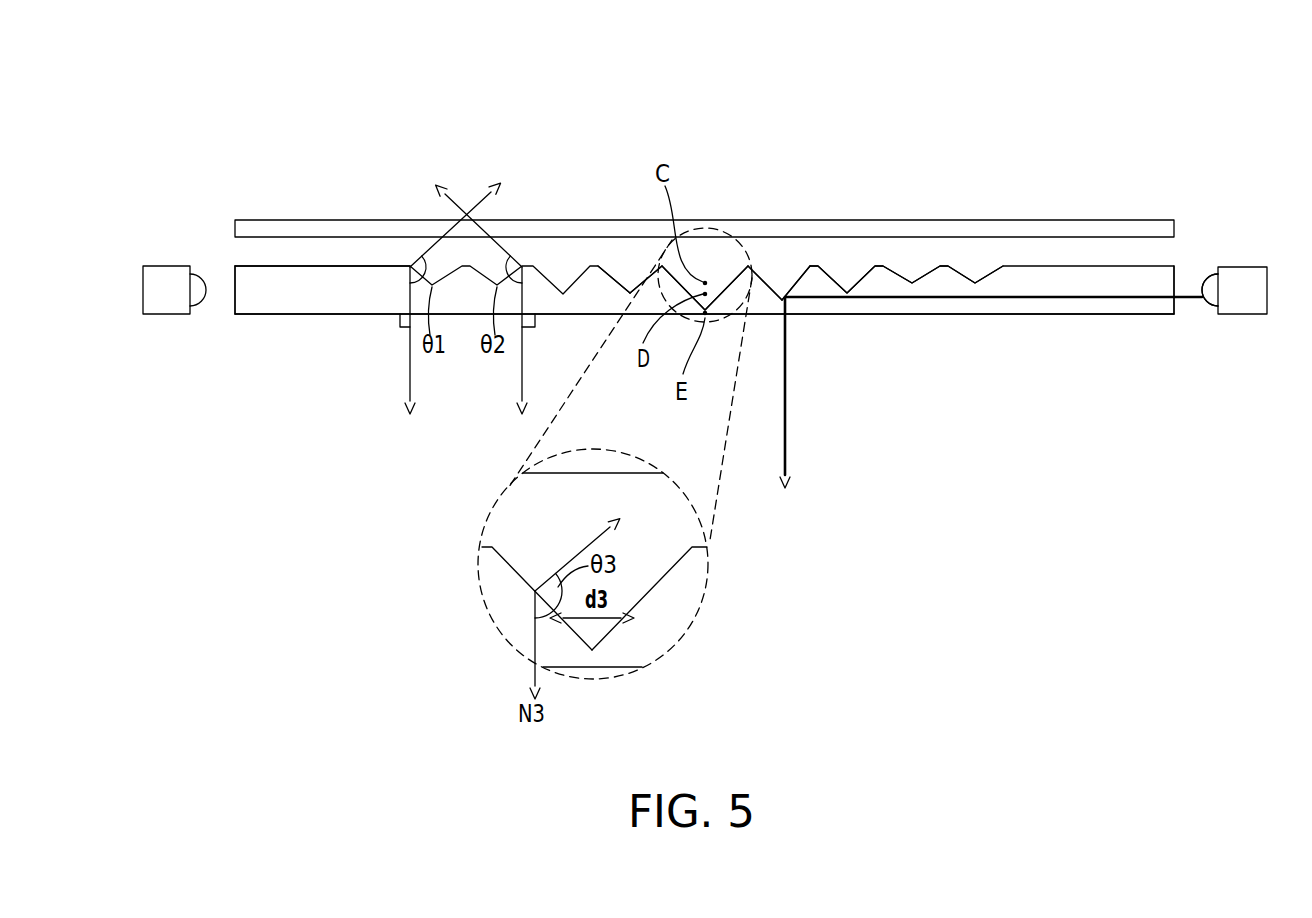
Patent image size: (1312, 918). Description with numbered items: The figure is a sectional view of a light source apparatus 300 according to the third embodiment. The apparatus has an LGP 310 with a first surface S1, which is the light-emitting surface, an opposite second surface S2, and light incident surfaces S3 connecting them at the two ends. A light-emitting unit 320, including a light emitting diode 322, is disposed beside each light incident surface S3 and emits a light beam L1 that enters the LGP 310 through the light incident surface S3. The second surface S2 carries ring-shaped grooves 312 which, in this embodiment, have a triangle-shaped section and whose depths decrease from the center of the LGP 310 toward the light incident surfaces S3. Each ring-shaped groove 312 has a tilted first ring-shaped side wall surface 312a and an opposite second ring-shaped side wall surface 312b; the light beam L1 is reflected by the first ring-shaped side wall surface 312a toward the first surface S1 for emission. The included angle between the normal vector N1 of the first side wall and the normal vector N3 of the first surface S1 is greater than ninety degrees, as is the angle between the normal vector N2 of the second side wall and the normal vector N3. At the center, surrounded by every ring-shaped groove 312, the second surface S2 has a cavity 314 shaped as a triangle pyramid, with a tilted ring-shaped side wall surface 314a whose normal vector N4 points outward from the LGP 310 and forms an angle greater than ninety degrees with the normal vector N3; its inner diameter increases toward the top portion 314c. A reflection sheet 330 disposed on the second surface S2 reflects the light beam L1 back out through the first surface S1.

The light source apparatus 300 is at (1296, 528).
The LGP 310 is at (1091, 320).
The ring-shaped groove 312 is at (912, 265).
The first ring-shaped side wall surface 312a is at (614, 278).
The second ring-shaped side wall surface 312b is at (642, 278).
The cavity 314 is at (718, 280).
The ring-shaped side wall surface 314a is at (508, 558).
The top portion 314c is at (659, 540).
The light-emitting unit 320 is at (143, 288).
The light emitting diode 322 is at (1202, 281).
The reflection sheet 330 is at (1131, 227).
The first surface S1 is at (303, 318).
The second surface S2 is at (255, 261).
The light incident surface S3 is at (233, 300).
The light beam L1 is at (787, 383).
The normal vector of the first ring-shaped side wall surface N1 is at (467, 218).
The normal vector of the second ring-shaped side wall surface N2 is at (465, 218).
The normal vector of the first surface N3 is at (467, 353).
The normal vector of the ring-shaped side wall surface of the cavity N4 is at (591, 549).